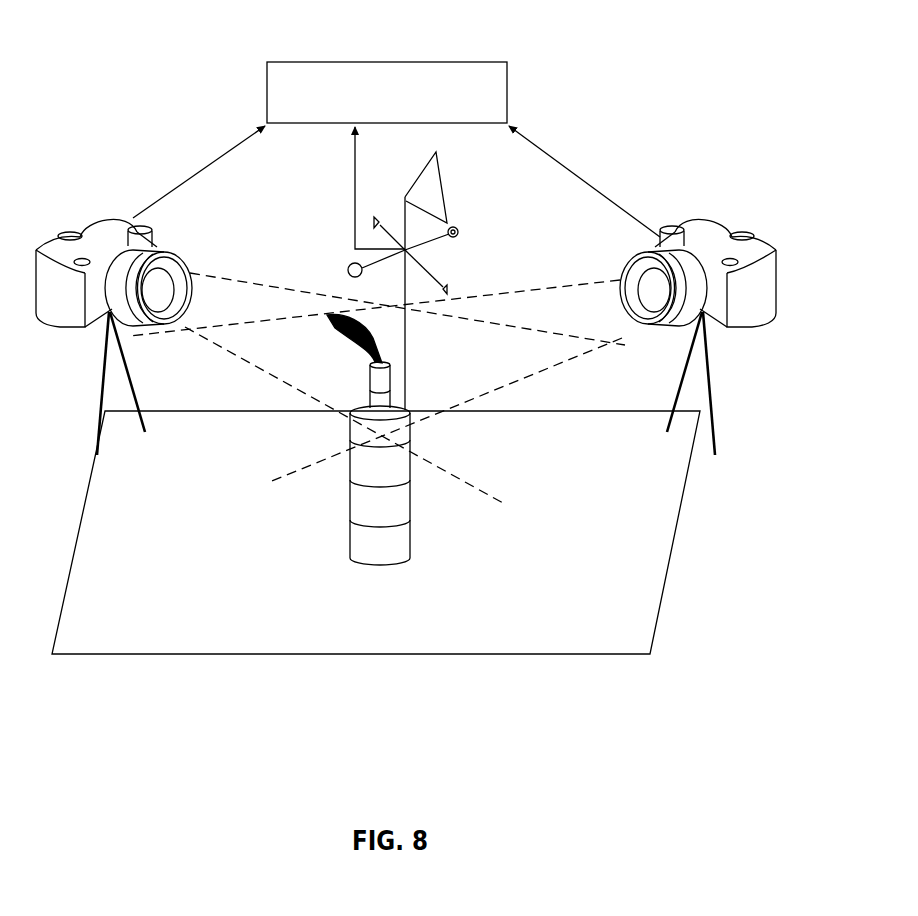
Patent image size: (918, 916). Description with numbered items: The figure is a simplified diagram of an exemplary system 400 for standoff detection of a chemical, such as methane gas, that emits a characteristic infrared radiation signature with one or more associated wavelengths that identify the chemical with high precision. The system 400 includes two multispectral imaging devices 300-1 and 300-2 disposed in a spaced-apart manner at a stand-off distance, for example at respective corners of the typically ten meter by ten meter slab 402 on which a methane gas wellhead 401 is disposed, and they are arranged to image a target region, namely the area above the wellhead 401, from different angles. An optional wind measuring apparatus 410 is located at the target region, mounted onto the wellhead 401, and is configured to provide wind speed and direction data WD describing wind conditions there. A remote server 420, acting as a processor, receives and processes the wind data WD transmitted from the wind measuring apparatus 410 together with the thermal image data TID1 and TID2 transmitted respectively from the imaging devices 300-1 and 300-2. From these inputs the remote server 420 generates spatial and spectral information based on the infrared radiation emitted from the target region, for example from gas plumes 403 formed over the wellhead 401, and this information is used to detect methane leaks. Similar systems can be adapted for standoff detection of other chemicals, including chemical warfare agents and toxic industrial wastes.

The system 400 is at (151, 67).
The remote server 420 is at (375, 111).
The multispectral imaging device 300-1 is at (96, 217).
The multispectral imaging device 300-2 is at (698, 224).
The wind measuring apparatus 410 is at (436, 250).
The methane gas wellhead 401 is at (349, 500).
The slab 402 is at (89, 469).
The gas plume 403 is at (365, 351).
The thermal image data TID1 is at (189, 177).
The thermal image data TID2 is at (585, 174).
The wind speed and direction data WD is at (352, 199).